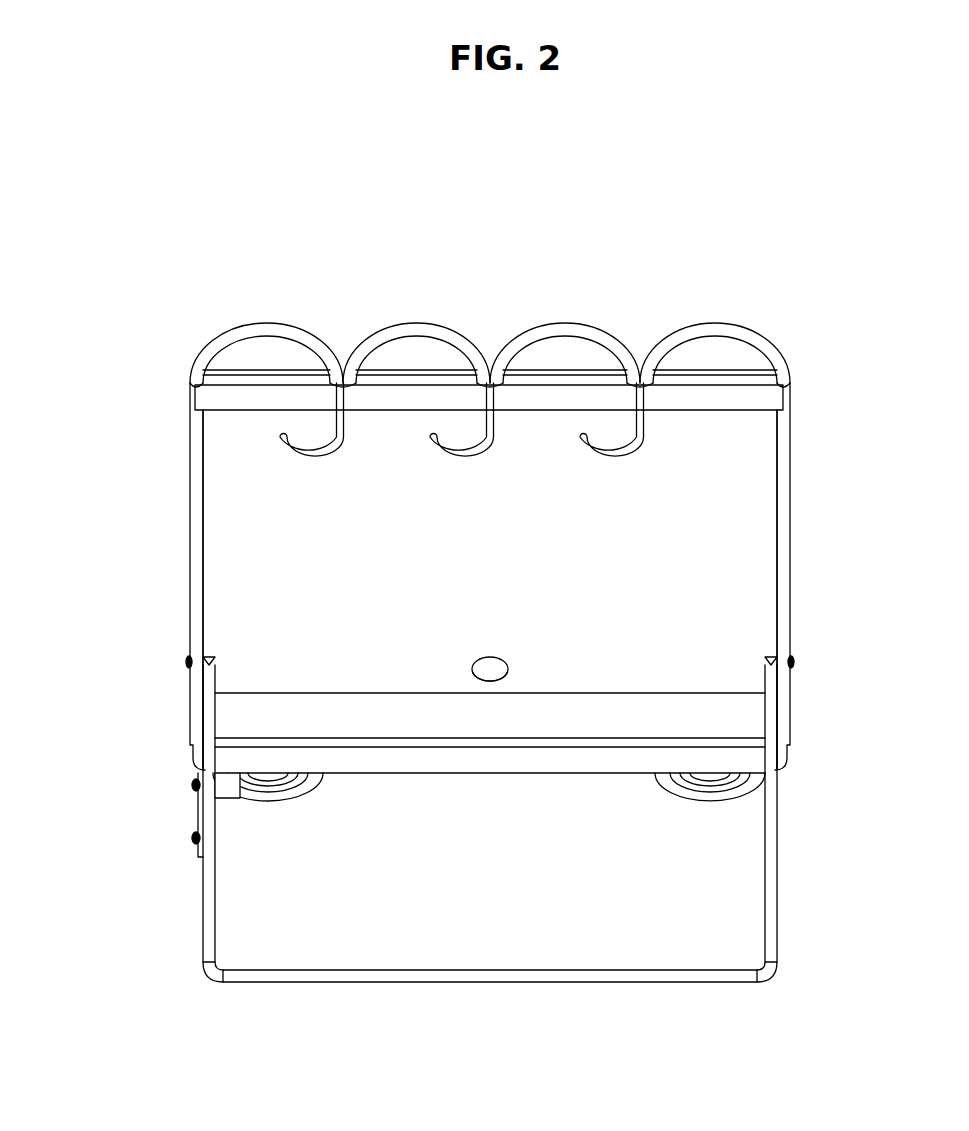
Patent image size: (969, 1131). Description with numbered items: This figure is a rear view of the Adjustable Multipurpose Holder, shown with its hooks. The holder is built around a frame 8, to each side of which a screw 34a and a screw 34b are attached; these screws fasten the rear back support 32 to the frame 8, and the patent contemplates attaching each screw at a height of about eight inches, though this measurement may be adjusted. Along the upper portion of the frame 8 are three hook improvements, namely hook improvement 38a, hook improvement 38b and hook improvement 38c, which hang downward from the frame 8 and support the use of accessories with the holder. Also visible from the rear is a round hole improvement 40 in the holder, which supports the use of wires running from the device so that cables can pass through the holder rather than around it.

The frame 8 is at (783, 470).
The rear back support 32 is at (207, 928).
The screw 34a is at (186, 661).
The screw 34b is at (792, 660).
The hook improvement 38a is at (337, 396).
The hook improvement 38b is at (487, 390).
The hook improvement 38c is at (642, 407).
The round hole improvement 40 is at (503, 660).